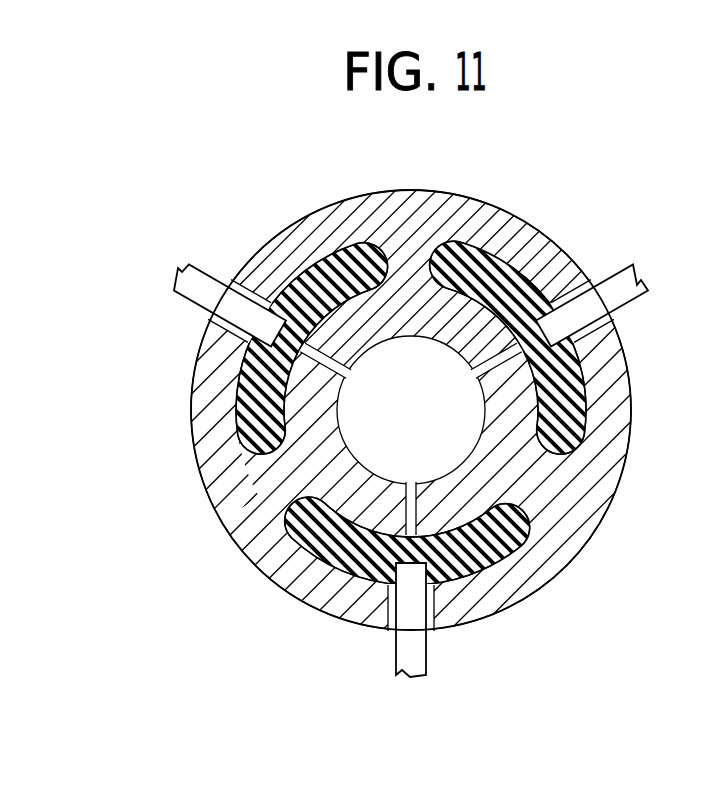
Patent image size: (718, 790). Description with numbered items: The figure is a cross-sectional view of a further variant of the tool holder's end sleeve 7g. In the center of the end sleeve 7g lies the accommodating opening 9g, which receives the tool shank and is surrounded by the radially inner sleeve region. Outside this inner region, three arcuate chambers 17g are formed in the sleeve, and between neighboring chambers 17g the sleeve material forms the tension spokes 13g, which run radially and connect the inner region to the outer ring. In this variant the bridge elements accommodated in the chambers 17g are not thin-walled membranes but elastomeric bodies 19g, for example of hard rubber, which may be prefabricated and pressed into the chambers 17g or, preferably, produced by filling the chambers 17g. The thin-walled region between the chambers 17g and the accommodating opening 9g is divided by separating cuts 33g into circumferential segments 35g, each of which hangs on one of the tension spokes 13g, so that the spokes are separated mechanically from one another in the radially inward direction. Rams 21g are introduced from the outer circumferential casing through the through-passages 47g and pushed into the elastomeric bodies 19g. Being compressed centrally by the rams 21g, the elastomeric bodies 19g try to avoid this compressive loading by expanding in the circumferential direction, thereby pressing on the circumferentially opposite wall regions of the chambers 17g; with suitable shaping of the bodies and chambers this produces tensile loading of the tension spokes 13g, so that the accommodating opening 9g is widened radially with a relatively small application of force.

The end sleeve 7g is at (486, 203).
The accommodating opening 9g is at (340, 410).
The tension spokes 13g is at (538, 480).
The chambers 17g is at (582, 414).
The elastomeric bodies 19g is at (567, 378).
The rams 21g is at (206, 270).
The separating cuts 33g is at (312, 350).
The circumferential segments 35g is at (402, 325).
The through-passages 47g is at (588, 334).